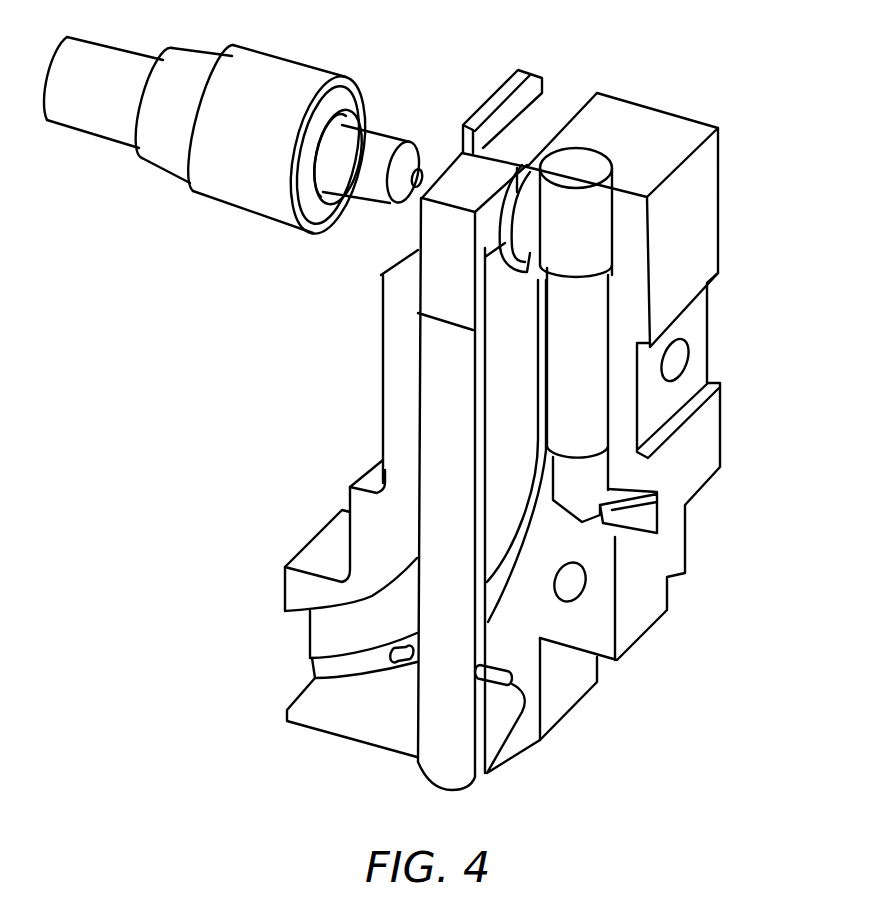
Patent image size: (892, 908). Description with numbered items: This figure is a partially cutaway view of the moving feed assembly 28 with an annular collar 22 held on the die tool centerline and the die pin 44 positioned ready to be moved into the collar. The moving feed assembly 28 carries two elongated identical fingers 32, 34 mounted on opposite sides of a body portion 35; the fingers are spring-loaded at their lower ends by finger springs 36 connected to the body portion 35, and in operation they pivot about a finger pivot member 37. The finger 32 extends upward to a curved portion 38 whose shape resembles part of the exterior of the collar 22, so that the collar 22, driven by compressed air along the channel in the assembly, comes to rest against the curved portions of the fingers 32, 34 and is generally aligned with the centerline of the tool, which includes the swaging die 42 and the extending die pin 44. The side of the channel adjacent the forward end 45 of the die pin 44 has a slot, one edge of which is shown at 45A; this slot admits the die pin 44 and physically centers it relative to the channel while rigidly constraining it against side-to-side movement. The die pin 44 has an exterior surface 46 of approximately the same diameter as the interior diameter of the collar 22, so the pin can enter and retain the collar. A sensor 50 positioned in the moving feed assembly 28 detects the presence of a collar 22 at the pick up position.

The annular collar 22 is at (500, 252).
The moving feed assembly 28 is at (262, 542).
The finger 32 is at (445, 428).
The finger 34 is at (540, 125).
The body portion 35 is at (623, 614).
The finger springs 36 is at (490, 731).
The finger pivot member 37 is at (398, 660).
The curved portion 38 is at (527, 223).
The swaging die 42 is at (253, 93).
The die pin 44 is at (390, 128).
The forward end 45 is at (441, 152).
The slot edge 45A is at (458, 140).
The exterior surface 46 is at (375, 172).
The sensor 50 is at (577, 312).